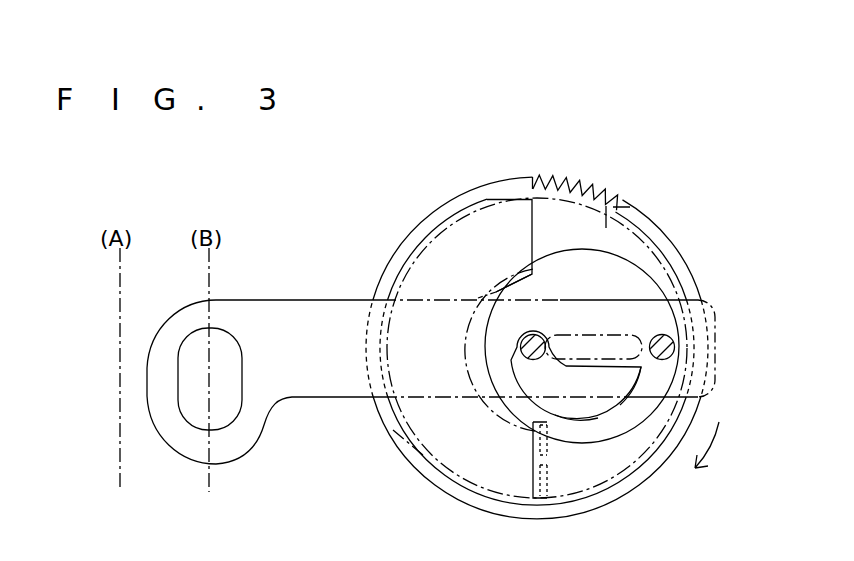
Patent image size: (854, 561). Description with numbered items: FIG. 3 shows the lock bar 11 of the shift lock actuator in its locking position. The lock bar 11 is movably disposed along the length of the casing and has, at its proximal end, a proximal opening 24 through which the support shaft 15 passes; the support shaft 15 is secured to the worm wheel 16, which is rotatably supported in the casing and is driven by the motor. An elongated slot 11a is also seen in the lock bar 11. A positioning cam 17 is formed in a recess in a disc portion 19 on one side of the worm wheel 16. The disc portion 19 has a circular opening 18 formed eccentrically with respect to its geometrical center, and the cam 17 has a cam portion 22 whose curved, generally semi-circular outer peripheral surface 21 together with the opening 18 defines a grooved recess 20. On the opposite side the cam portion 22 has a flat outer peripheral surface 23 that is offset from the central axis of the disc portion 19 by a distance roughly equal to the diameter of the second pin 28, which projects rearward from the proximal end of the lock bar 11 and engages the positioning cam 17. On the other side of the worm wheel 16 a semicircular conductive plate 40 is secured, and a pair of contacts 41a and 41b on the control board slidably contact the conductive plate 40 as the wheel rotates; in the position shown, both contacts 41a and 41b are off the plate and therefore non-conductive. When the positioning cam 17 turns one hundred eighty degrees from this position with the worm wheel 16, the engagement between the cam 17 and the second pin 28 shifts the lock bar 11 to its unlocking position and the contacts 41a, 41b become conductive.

The lock bar 11 is at (236, 297).
The slot of lever 11a is at (230, 420).
The support shaft 15 is at (525, 339).
The worm wheel 16 is at (530, 178).
The positioning cam 17 is at (613, 285).
The circular opening 18 is at (553, 263).
The disc portion 19 is at (609, 205).
The grooved recess 20 is at (598, 425).
The curved outer peripheral surface 21 is at (505, 382).
The cam portion 22 is at (565, 400).
The flat outer peripheral surface 23 is at (580, 366).
The proximal opening 24 is at (607, 354).
The second pin 28 is at (657, 340).
The conductive plate 40 is at (410, 443).
The contact 41a is at (533, 432).
The contact 41b is at (540, 490).